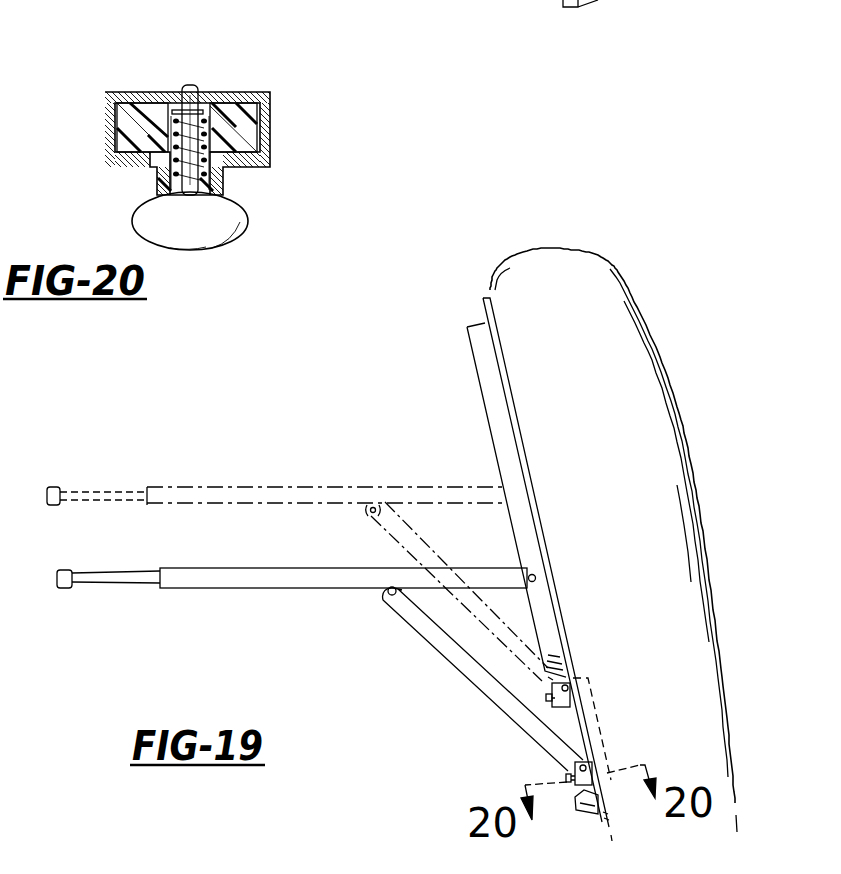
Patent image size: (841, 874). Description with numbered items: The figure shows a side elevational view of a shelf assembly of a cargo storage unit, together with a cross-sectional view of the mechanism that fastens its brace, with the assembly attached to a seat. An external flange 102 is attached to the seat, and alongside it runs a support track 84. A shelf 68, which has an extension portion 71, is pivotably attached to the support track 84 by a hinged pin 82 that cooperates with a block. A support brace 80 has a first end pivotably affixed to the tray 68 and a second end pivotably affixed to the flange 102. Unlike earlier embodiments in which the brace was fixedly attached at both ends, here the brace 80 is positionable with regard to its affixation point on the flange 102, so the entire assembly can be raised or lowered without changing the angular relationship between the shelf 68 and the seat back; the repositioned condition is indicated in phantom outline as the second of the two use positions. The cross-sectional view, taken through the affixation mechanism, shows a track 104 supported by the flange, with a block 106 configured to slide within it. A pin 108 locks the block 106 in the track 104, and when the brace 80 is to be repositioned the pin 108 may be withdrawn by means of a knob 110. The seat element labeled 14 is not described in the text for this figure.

In FIG. 19, the head restraint pad 14 is at (611, 296).
In FIG. 19, the external flange 102 is at (483, 319).
In FIG. 19, the support track 84 is at (488, 400).
In FIG. 19, the hinged pin 82 is at (523, 570).
In FIG. 19, the extension portion 71 is at (128, 583).
In FIG. 19, the shelf 68 is at (250, 585).
In FIG. 19, the support brace 80 is at (453, 657).
In FIG. 20, the track 104 is at (126, 97).
In FIG. 20, the block 106 is at (133, 138).
In FIG. 20, the pin 108 is at (197, 88).
In FIG. 20, the knob 110 is at (227, 212).